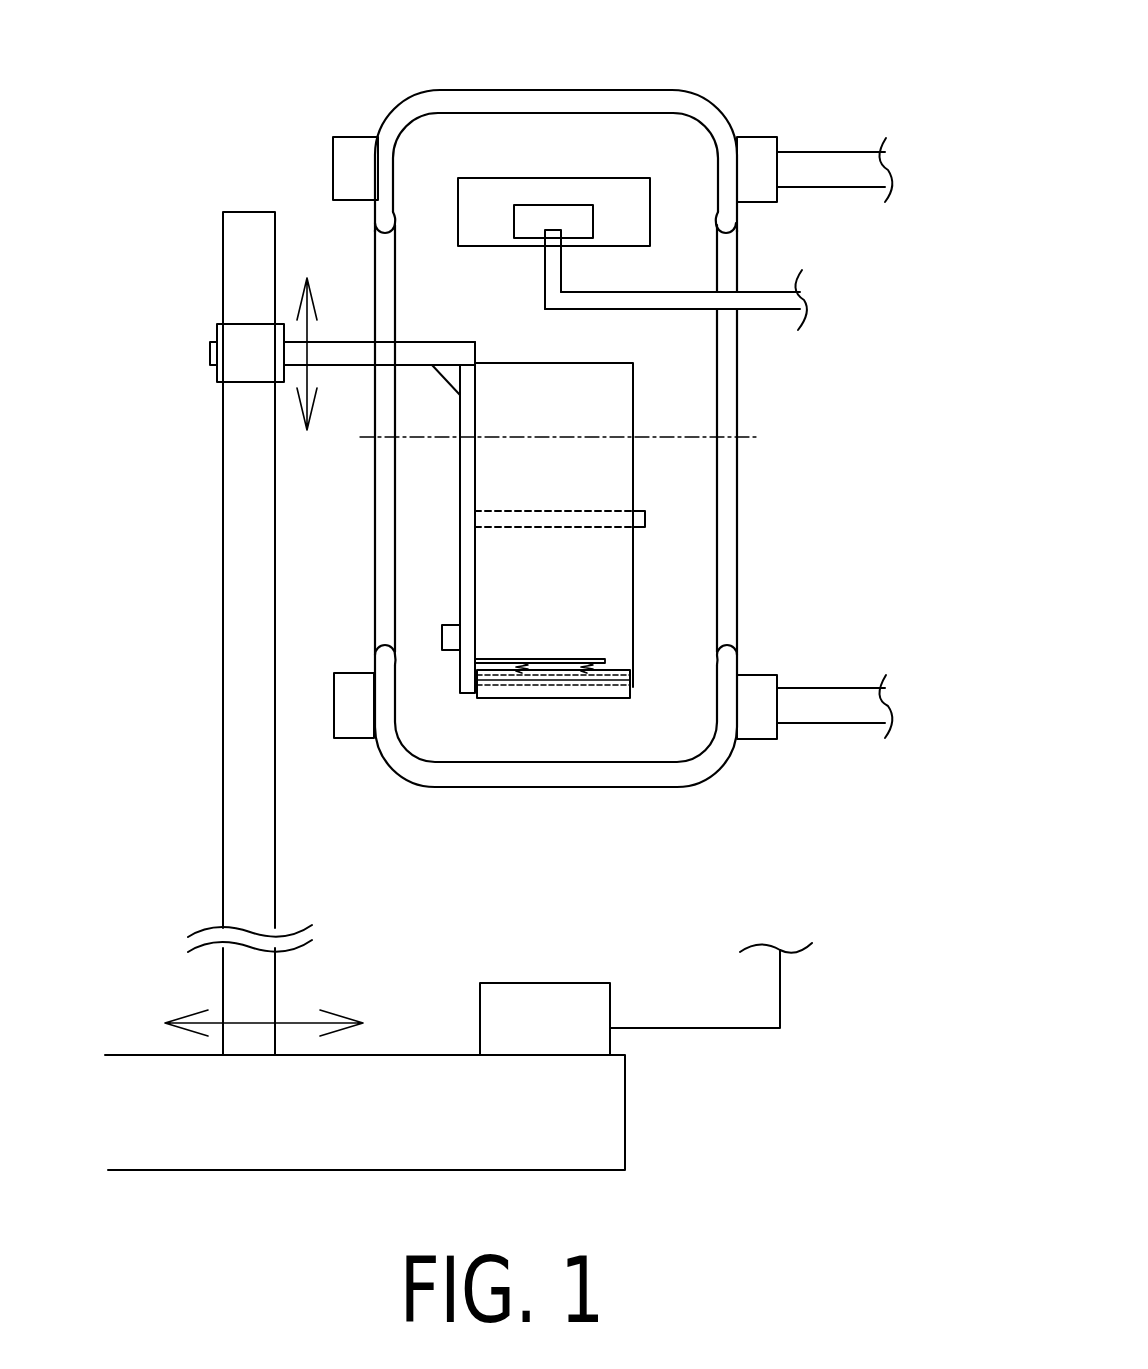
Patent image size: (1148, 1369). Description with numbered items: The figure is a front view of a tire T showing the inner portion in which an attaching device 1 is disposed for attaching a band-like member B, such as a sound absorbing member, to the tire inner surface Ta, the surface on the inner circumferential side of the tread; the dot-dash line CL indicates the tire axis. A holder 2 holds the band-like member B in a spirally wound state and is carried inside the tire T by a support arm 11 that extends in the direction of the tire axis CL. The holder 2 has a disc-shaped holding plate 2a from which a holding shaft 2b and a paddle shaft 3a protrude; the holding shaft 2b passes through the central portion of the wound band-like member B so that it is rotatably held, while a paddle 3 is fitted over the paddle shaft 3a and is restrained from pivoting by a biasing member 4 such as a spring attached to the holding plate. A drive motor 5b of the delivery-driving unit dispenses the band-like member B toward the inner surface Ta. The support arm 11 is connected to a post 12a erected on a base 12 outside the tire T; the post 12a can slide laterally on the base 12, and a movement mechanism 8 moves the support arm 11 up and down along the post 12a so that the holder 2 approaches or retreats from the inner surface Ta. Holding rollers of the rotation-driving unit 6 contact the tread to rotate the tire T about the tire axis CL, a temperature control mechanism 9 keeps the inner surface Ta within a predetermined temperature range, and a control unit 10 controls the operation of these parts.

The attaching device 1 is at (745, 113).
The tire T is at (624, 92).
The tire inner surface Ta is at (480, 760).
The holder 2 is at (458, 468).
The holding plate 2a is at (462, 542).
The holding shaft 2b is at (645, 516).
The paddle 3 is at (585, 693).
The paddle shaft 3a is at (633, 680).
The biasing member 4 is at (526, 674).
The drive motor 5b is at (452, 626).
The rotation-driving unit 6 is at (352, 148).
The movement mechanism 8 is at (247, 337).
The temperature control mechanism 9 is at (612, 190).
The control unit 10 is at (536, 998).
The support arm 11 is at (353, 345).
The base 12 is at (412, 1068).
The post 12a is at (258, 866).
The band-like member B is at (612, 420).
The tire axis CL is at (584, 436).